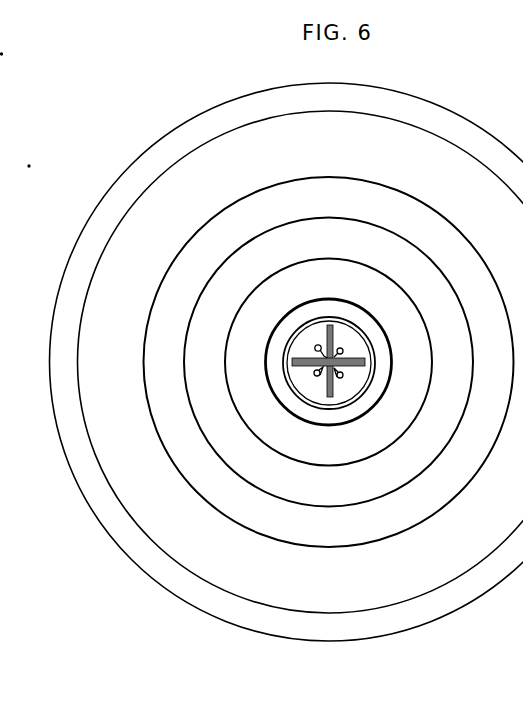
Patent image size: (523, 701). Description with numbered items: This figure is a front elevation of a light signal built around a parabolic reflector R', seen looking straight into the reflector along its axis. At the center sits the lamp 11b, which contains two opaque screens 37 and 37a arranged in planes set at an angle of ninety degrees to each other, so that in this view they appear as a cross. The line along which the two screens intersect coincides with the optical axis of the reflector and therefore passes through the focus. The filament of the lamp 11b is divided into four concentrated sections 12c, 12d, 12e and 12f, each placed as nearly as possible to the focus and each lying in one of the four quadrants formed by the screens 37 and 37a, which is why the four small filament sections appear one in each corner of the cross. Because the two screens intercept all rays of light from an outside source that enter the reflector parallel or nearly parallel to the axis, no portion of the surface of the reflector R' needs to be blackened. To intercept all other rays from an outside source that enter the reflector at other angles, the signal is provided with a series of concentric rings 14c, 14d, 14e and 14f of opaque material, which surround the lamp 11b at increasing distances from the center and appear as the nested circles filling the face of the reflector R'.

The reflector R' is at (287, 356).
The ring of opaque material 14c is at (341, 171).
The ring of opaque material 14d is at (339, 218).
The ring of opaque material 14e is at (352, 261).
The ring of opaque material 14f is at (361, 308).
The lamp 11b is at (320, 404).
The opaque screen 37 is at (366, 362).
The opaque screen 37a is at (334, 329).
The filament section 12c is at (316, 347).
The filament section 12d is at (316, 376).
The filament section 12e is at (340, 378).
The filament section 12f is at (342, 352).